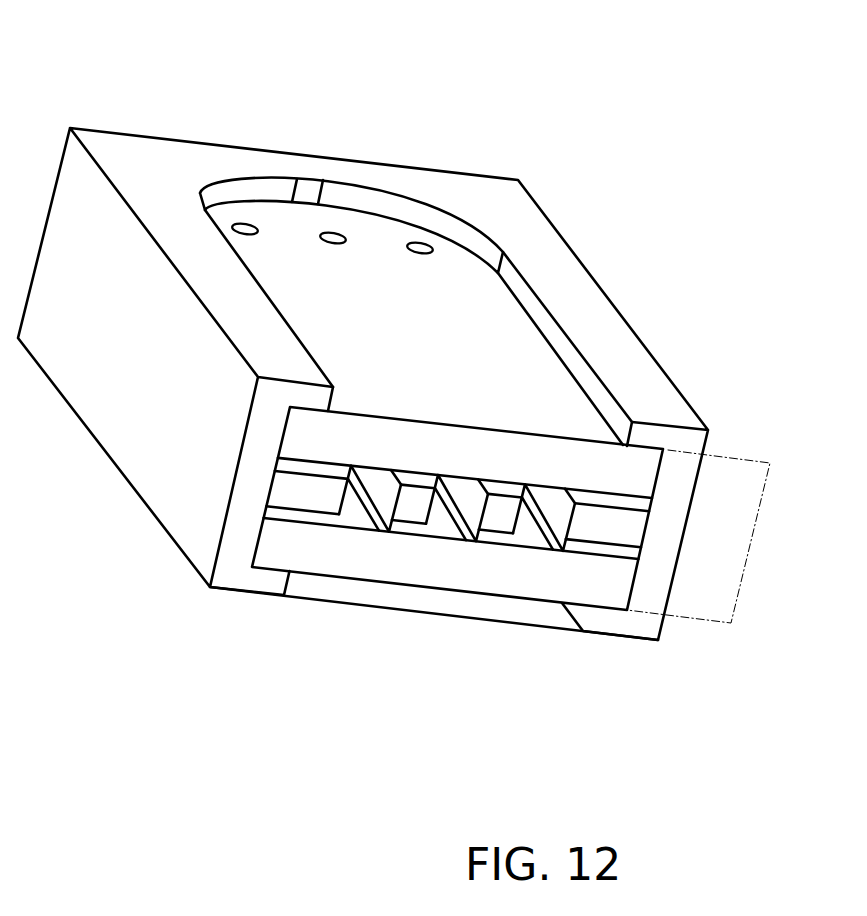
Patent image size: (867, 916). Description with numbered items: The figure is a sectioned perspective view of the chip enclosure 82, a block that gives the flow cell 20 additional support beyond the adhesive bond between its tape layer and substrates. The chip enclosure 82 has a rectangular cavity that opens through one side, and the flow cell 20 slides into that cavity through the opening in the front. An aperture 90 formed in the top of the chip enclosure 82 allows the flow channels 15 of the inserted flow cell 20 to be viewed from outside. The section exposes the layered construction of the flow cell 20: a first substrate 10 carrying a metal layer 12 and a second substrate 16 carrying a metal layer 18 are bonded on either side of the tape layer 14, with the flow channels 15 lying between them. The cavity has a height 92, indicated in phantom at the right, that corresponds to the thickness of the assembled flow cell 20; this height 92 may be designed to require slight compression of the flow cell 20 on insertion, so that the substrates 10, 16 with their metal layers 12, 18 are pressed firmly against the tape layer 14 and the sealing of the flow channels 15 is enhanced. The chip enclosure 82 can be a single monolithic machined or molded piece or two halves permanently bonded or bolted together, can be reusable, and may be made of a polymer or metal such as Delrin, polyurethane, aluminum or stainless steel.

The substrate 10 is at (483, 443).
The metal layer 12 is at (510, 490).
The tape layer 14 is at (413, 505).
The flow channels 15 is at (365, 495).
The substrate 16 is at (505, 568).
The metal layer 18 is at (297, 512).
The flow cell 20 is at (555, 603).
The chip enclosure 82 is at (153, 163).
The aperture 90 is at (453, 275).
The height 92 is at (748, 552).